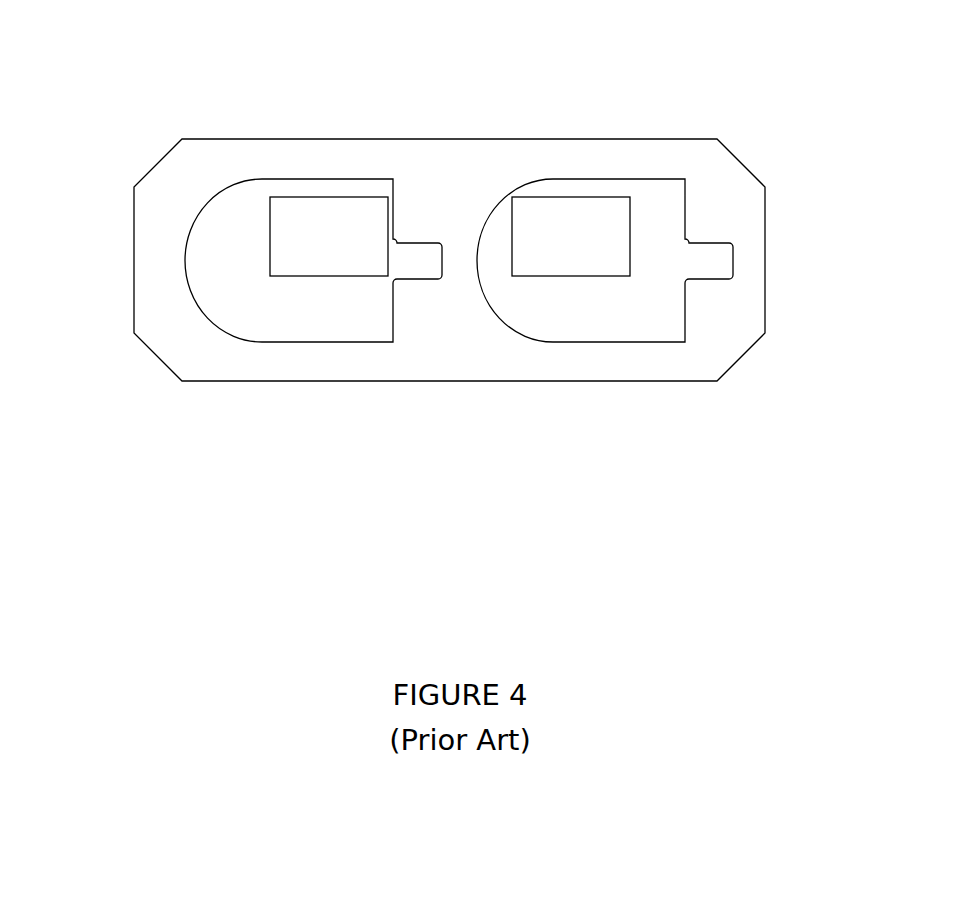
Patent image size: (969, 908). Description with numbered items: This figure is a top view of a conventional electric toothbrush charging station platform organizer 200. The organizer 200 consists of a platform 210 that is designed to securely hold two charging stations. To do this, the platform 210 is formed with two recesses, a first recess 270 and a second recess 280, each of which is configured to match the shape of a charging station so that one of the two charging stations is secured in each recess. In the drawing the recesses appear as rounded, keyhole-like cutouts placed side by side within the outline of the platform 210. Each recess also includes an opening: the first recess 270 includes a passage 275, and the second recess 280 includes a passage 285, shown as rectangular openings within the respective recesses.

The electric toothbrush charging station platform organizer 200 is at (115, 48).
The platform 210 is at (175, 227).
The recess 270 is at (235, 245).
The passage 275 is at (335, 255).
The recess 280 is at (655, 307).
The passage 285 is at (562, 226).